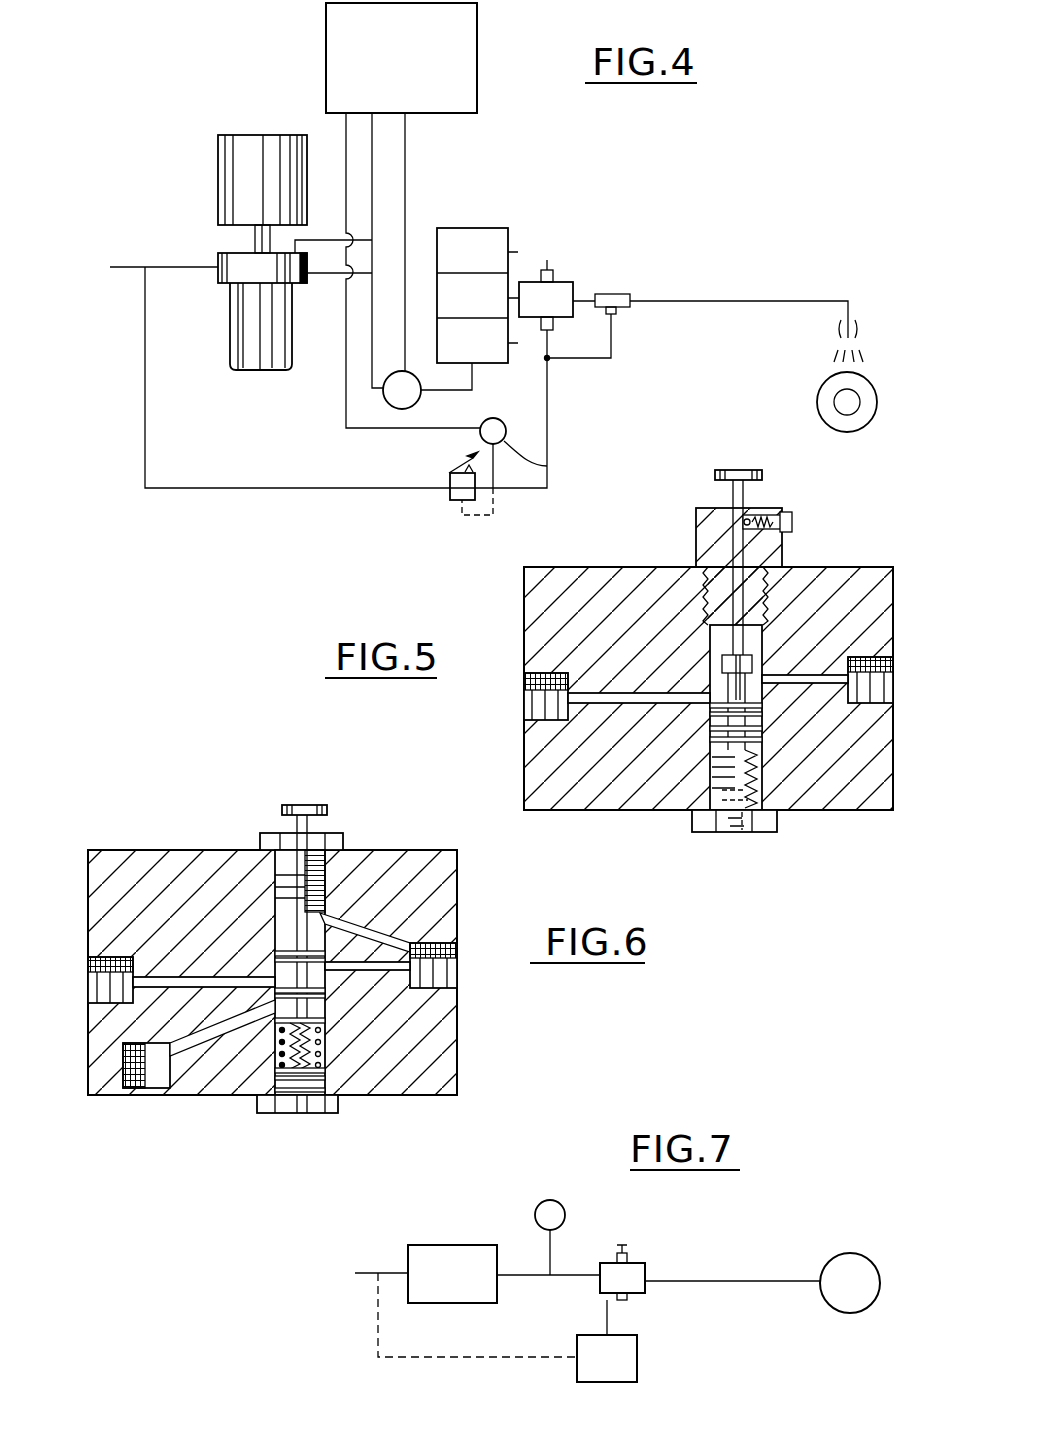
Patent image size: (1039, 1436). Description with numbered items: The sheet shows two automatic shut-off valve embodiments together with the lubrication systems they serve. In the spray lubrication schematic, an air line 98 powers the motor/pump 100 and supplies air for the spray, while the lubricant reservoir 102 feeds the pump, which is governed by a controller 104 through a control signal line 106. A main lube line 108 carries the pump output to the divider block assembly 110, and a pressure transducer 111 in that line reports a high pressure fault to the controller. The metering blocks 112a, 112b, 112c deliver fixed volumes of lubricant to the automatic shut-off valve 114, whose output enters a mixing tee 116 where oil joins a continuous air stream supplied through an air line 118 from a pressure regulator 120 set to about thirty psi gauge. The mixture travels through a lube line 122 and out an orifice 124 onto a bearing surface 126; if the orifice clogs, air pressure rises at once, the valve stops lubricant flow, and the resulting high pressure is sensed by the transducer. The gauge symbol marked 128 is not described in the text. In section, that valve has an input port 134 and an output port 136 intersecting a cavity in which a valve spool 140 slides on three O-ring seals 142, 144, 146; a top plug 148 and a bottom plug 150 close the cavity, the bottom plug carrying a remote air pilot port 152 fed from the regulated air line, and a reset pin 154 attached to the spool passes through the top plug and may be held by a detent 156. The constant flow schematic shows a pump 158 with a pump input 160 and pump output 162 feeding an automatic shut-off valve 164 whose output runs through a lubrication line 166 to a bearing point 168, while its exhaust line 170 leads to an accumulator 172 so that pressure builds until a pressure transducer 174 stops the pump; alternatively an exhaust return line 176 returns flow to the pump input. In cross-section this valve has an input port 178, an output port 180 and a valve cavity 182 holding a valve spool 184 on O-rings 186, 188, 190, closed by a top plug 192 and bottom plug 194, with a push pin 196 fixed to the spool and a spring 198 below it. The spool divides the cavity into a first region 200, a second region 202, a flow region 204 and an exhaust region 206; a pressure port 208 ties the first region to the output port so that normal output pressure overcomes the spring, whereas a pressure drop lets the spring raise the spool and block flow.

In FIG. 4, the air line 98 is at (123, 266).
In FIG. 4, the motor/pump 100 is at (230, 335).
In FIG. 4, the lubricant reservoir 102 is at (282, 104).
In FIG. 4, the controller 104 is at (478, 44).
In FIG. 4, the control signal line 106 is at (373, 155).
In FIG. 4, the main lube line 108 is at (380, 284).
In FIG. 4, the divider block assembly 110 is at (515, 225).
In FIG. 4, the pressure transducer 111 is at (397, 410).
In FIG. 4, the metering block 112a is at (508, 362).
In FIG. 4, the metering block 112b is at (508, 278).
In FIG. 4, the metering block 112c is at (452, 228).
In FIG. 4, the automatic shut-off valve 114 is at (575, 282).
In FIG. 5, the automatic shut-off valve 114 is at (850, 541).
In FIG. 4, the mixing tee 116 is at (625, 294).
In FIG. 4, the air line 118 is at (547, 437).
In FIG. 4, the pressure regulator 120 is at (447, 502).
In FIG. 4, the lube line 122 is at (760, 292).
In FIG. 4, the orifice 124 is at (856, 333).
In FIG. 4, the bearing surface 126 is at (873, 393).
In FIG. 4, the pressure gauge 128 is at (547, 468).
In FIG. 5, the input port 134 is at (530, 702).
In FIG. 5, the output port 136 is at (885, 681).
In FIG. 5, the valve spool 140 is at (762, 728).
In FIG. 5, the O-ring seal 142 is at (775, 660).
In FIG. 5, the O-ring seal 144 is at (762, 712).
In FIG. 5, the O-ring seal 146 is at (762, 740).
In FIG. 5, the top plug 148 is at (695, 520).
In FIG. 5, the bottom plug 150 is at (697, 834).
In FIG. 5, the remote air pilot port 152 is at (740, 834).
In FIG. 5, the reset pin 154 is at (750, 470).
In FIG. 5, the detent 156 is at (790, 520).
In FIG. 7, the pump 158 is at (470, 1218).
In FIG. 7, the pump input 160 is at (392, 1270).
In FIG. 7, the pump output 162 is at (523, 1282).
In FIG. 6, the automatic shut-off valve 164 is at (468, 905).
In FIG. 7, the automatic shut-off valve 164 is at (645, 1265).
In FIG. 7, the lubrication line 166 is at (767, 1281).
In FIG. 7, the bearing point 168 is at (858, 1233).
In FIG. 7, the exhaust line 170 is at (608, 1320).
In FIG. 7, the accumulator 172 is at (638, 1355).
In FIG. 7, the pressure transducer 174 is at (565, 1208).
In FIG. 7, the exhaust return line 176 is at (420, 1355).
In FIG. 6, the input port 178 is at (95, 985).
In FIG. 6, the output port 180 is at (458, 966).
In FIG. 6, the valve cavity 182 is at (268, 940).
In FIG. 6, the valve spool 184 is at (320, 1017).
In FIG. 6, the O-ring 186 is at (325, 985).
In FIG. 6, the O-ring 188 is at (325, 1003).
In FIG. 6, the O-ring 190 is at (322, 1038).
In FIG. 6, the top plug 192 is at (342, 835).
In FIG. 6, the bottom plug 194 is at (312, 1117).
In FIG. 6, the push pin 196 is at (318, 805).
In FIG. 6, the spring 198 is at (270, 1063).
In FIG. 6, the first region 200 is at (340, 905).
In FIG. 6, the second region 202 is at (255, 1060).
In FIG. 6, the flow region 204 is at (272, 917).
In FIG. 6, the exhaust region 206 is at (176, 1096).
In FIG. 6, the pressure port 208 is at (395, 935).